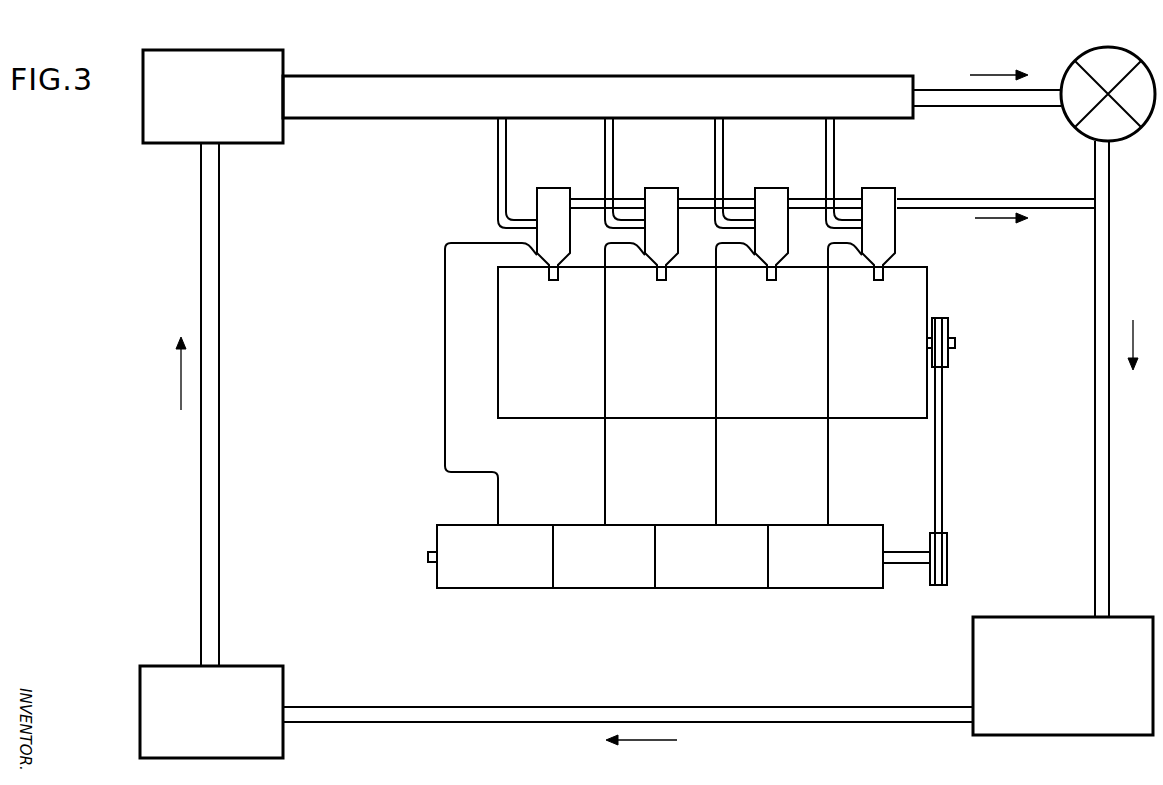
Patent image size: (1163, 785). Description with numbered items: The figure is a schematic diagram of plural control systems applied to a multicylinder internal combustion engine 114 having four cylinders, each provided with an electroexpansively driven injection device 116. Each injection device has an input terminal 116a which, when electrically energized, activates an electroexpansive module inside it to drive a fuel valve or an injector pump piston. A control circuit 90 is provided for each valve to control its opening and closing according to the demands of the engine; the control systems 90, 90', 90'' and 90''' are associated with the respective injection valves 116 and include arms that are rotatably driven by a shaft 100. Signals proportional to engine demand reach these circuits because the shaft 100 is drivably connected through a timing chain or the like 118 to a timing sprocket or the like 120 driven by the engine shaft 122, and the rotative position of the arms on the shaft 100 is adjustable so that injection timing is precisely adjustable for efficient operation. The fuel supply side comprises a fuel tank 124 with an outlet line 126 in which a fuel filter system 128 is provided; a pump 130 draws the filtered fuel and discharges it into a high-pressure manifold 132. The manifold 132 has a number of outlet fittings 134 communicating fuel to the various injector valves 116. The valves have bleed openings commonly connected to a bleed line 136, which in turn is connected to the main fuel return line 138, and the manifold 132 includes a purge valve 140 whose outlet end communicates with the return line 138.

The control circuit 90 is at (660, 580).
The control system 90' is at (604, 580).
The control system 90'' is at (711, 580).
The control system 90''' is at (825, 580).
The shaft 100 is at (428, 555).
The internal combustion engine 114 is at (875, 406).
The injection device 116 is at (558, 195).
The input terminal 116a is at (606, 258).
The timing chain 118 is at (942, 460).
The timing sprocket 120 is at (948, 360).
The engine shaft 122 is at (952, 346).
The fuel tank 124 is at (973, 670).
The outlet line 126 is at (648, 707).
The fuel filter system 128 is at (283, 690).
The pump 130 is at (283, 51).
The high-pressure manifold 132 is at (450, 76).
The outlet fittings 134 is at (605, 137).
The bleed line 136 is at (989, 197).
The main fuel return line 138 is at (1095, 313).
The purge valve 140 is at (1075, 60).